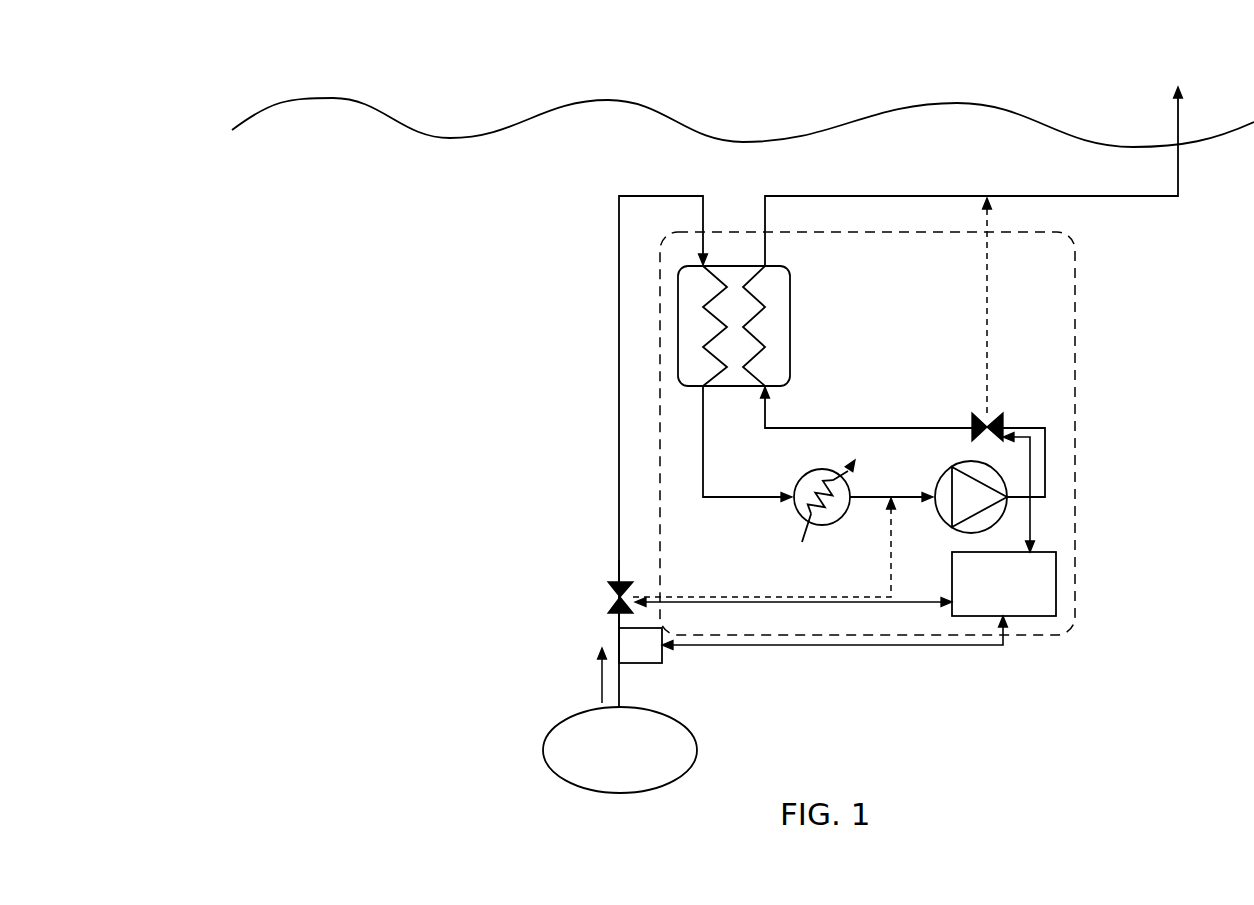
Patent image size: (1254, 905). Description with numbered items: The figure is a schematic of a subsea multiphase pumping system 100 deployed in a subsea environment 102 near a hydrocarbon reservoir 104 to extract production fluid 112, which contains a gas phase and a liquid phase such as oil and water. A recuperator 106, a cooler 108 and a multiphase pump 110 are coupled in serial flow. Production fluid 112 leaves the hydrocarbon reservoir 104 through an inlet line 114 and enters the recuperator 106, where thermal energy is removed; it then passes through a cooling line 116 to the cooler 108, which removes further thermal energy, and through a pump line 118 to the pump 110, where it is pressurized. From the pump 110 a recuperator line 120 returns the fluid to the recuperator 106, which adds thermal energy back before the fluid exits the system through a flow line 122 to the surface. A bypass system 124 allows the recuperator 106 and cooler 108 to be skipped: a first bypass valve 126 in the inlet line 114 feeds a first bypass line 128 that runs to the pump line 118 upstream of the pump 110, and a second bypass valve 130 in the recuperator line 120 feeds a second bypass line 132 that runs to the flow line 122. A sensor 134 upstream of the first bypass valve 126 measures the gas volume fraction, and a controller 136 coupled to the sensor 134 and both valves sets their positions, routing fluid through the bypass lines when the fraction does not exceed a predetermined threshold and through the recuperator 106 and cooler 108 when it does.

The subsea multiphase pumping system 100 is at (1060, 665).
The subsea environment 102 is at (336, 97).
The hydrocarbon reservoir 104 is at (545, 748).
The recuperator 106 is at (790, 325).
The cooler 108 is at (800, 515).
The multiphase pump 110 is at (1005, 480).
The production fluid 112 is at (600, 677).
The inlet line 114 is at (619, 243).
The cooling line 116 is at (703, 450).
The pump line 118 is at (878, 495).
The recuperator line 120 is at (1045, 447).
The flow line 122 is at (922, 196).
The bypass system 124 is at (540, 596).
The first bypass valve 126 is at (610, 585).
The first bypass line 128 is at (891, 563).
The second bypass valve 130 is at (980, 415).
The second bypass line 132 is at (987, 285).
The sensor 134 is at (650, 663).
The controller 136 is at (1056, 585).